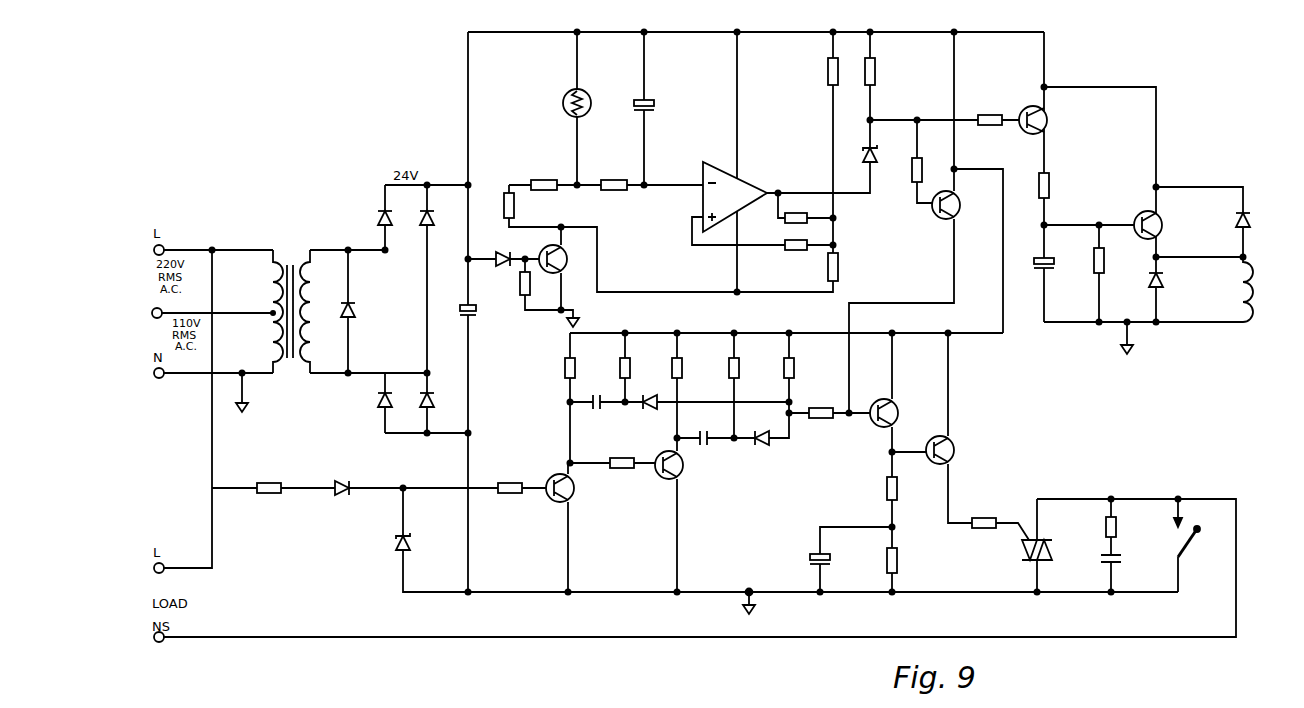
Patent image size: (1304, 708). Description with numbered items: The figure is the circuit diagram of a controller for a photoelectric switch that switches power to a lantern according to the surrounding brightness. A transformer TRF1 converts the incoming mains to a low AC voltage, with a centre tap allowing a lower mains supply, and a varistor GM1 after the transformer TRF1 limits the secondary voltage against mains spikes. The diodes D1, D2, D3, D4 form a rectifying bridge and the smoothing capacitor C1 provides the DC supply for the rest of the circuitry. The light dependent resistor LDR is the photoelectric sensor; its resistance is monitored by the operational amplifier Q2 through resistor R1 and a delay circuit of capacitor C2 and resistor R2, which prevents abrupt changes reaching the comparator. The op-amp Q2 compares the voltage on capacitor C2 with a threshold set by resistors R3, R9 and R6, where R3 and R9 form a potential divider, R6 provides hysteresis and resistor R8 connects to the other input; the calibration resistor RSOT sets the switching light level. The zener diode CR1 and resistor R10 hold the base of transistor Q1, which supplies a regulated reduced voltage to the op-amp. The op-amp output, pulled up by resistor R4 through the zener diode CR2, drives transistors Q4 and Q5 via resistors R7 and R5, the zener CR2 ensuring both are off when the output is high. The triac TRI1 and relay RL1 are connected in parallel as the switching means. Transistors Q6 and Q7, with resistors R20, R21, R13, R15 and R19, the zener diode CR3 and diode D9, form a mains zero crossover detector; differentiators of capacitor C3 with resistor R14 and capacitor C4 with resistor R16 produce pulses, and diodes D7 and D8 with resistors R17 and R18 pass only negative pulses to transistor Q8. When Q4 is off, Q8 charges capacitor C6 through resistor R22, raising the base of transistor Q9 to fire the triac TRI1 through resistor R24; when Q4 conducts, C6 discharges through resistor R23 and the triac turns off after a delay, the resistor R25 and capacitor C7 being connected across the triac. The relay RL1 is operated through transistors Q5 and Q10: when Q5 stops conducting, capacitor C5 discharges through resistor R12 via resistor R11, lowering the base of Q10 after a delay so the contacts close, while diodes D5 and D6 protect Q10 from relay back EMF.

The transformer TRF1 is at (272, 311).
The varistor GM1 is at (364, 314).
The diode D1 is at (374, 218).
The diode D2 is at (417, 218).
The diode D3 is at (373, 401).
The diode D4 is at (417, 401).
The smoothing capacitor C1 is at (481, 310).
The resistor Rsot RSOT is at (492, 205).
The zener diode CR1 is at (494, 256).
The transistor Q1 is at (562, 252).
The resistor R10 is at (526, 283).
The light dependent resistor LDR is at (587, 95).
The capacitor C2 is at (650, 100).
The resistor R1 is at (544, 184).
The resistor R2 is at (614, 184).
The operational amplifier Q2 is at (732, 188).
The resistor R6 is at (793, 216).
The resistor R8 is at (789, 244).
The resistor R9 is at (836, 267).
The resistor R3 is at (835, 63).
The resistor R4 is at (879, 63).
The zener diode CR2 is at (857, 156).
The resistor R5 is at (990, 119).
The resistor R7 is at (924, 162).
The transistor Q4 is at (958, 205).
The transistor Q5 is at (1045, 120).
The resistor R11 is at (1047, 185).
The capacitor C5 is at (1049, 257).
The resistor R12 is at (1103, 271).
The transistor Q10 is at (1163, 225).
The diode D6 is at (1248, 215).
The diode D5 is at (1169, 282).
The relay RL1 is at (1218, 408).
The resistor R13 is at (572, 359).
The resistor R14 is at (627, 359).
The resistor R15 is at (680, 359).
The resistor R16 is at (736, 359).
The resistor R17 is at (797, 359).
The capacitor C3 is at (598, 407).
The diode D7 is at (650, 394).
The capacitor C4 is at (712, 441).
The diode D8 is at (761, 430).
The resistor R18 is at (825, 413).
The transistor Q8 is at (894, 413).
The transistor Q9 is at (951, 450).
The transistor Q7 is at (680, 466).
The resistor R19 is at (621, 462).
The transistor Q6 is at (571, 488).
The resistor R21 is at (509, 487).
The resistor R20 is at (270, 487).
The diode D9 is at (347, 487).
The zener diode CR3 is at (406, 539).
The resistor R22 is at (895, 488).
The resistor R23 is at (898, 566).
The capacitor C6 is at (833, 552).
The resistor R24 is at (983, 525).
The triac TRI1 is at (1042, 541).
The resistor R25 is at (1116, 527).
The capacitor C7 is at (1122, 561).